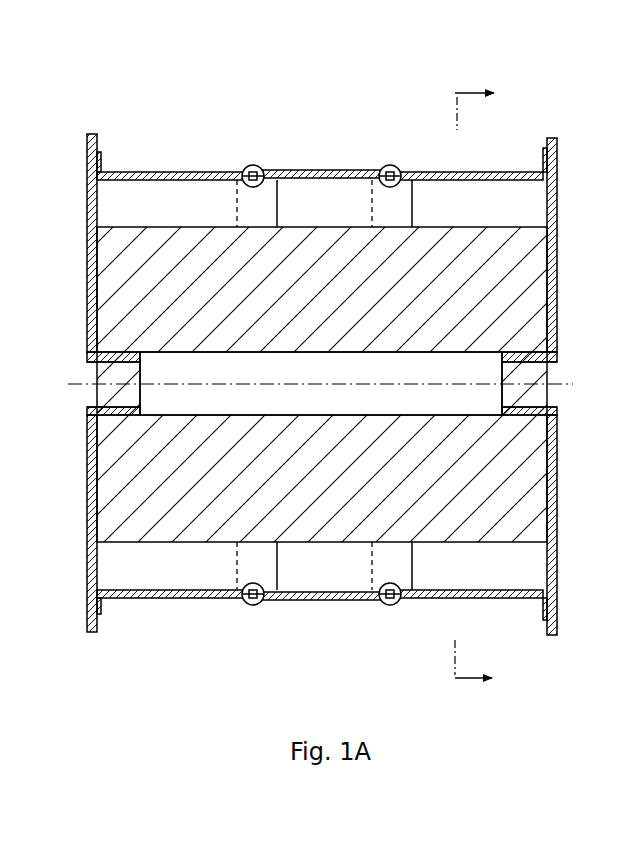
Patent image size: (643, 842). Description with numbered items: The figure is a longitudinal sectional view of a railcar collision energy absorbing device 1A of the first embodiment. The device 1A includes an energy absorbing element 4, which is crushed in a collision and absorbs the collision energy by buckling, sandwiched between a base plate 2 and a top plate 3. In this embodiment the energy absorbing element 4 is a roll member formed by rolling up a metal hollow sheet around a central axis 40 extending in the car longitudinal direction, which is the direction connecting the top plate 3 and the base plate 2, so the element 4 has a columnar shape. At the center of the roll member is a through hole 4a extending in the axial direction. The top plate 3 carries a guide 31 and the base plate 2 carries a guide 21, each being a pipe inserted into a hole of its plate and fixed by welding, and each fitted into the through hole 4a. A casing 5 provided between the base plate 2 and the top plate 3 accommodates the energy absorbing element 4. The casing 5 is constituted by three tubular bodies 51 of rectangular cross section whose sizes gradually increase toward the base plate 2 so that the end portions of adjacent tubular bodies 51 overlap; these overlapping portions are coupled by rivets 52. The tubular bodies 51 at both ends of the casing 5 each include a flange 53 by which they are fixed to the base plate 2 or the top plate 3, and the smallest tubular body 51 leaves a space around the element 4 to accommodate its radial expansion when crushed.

The railcar collision energy absorbing device 1A is at (158, 118).
The base plate 2 is at (556, 634).
The guide 21 is at (515, 420).
The top plate 3 is at (88, 622).
The guide 31 is at (120, 417).
The energy absorbing element 4 is at (185, 510).
The through hole 4a is at (405, 415).
The central axis 40 is at (322, 388).
The casing 5 is at (306, 168).
The tubular body 51 is at (190, 172).
The rivet 52 is at (253, 165).
The flange 53 is at (99, 172).